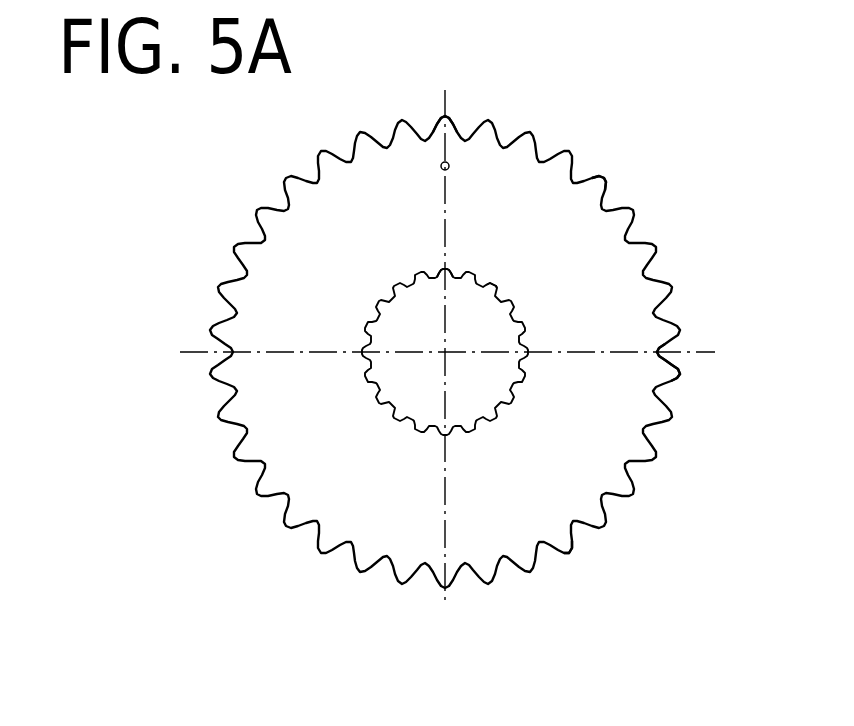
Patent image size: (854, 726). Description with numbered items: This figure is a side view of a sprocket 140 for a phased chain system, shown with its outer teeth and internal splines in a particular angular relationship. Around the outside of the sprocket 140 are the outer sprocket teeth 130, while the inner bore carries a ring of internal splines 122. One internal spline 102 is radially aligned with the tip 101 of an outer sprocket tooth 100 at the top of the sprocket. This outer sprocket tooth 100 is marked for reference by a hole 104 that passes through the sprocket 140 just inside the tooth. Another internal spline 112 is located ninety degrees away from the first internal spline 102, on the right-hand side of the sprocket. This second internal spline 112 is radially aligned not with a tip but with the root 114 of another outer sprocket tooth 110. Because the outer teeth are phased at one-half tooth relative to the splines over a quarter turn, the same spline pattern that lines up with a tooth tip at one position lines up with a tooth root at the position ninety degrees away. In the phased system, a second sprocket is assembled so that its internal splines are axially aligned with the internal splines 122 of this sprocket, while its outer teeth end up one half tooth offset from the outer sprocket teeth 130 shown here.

The outer sprocket tooth 100 is at (440, 120).
The tip 101 is at (448, 118).
The hole 104 is at (441, 168).
The outer sprocket teeth 130 is at (606, 182).
The outer sprocket tooth 110 is at (658, 352).
The root 114 is at (668, 384).
The sprocket 140 is at (558, 515).
The internal spline 112 is at (528, 355).
The internal spline 102 is at (444, 271).
The internal splines 122 is at (488, 283).